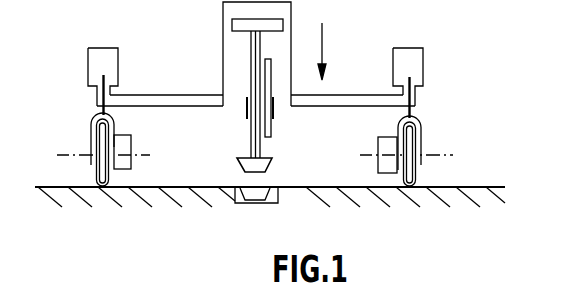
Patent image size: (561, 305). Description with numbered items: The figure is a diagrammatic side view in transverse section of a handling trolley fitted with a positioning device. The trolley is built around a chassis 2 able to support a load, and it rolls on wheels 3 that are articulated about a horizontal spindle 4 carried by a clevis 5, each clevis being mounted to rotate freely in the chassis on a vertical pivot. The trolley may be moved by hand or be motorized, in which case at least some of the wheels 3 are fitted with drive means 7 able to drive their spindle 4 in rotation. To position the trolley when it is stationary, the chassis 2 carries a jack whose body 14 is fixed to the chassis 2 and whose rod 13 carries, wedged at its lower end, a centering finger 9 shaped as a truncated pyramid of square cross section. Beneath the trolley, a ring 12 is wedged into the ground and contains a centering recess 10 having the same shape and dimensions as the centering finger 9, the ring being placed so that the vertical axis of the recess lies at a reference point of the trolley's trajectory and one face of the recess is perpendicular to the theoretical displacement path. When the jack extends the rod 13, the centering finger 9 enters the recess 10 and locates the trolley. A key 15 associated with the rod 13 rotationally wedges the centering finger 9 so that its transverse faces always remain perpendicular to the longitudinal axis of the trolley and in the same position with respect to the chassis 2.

The chassis 2 is at (165, 95).
The wheels 3 is at (97, 179).
The horizontal spindle 4 is at (153, 156).
The clevis 5 is at (422, 128).
The drive means 7 is at (378, 142).
The centering finger 9 is at (243, 164).
The centering recess 10 is at (263, 185).
The ring 12 is at (234, 204).
The rod 13 is at (252, 143).
The jack body 14 is at (222, 50).
The key 15 is at (268, 78).